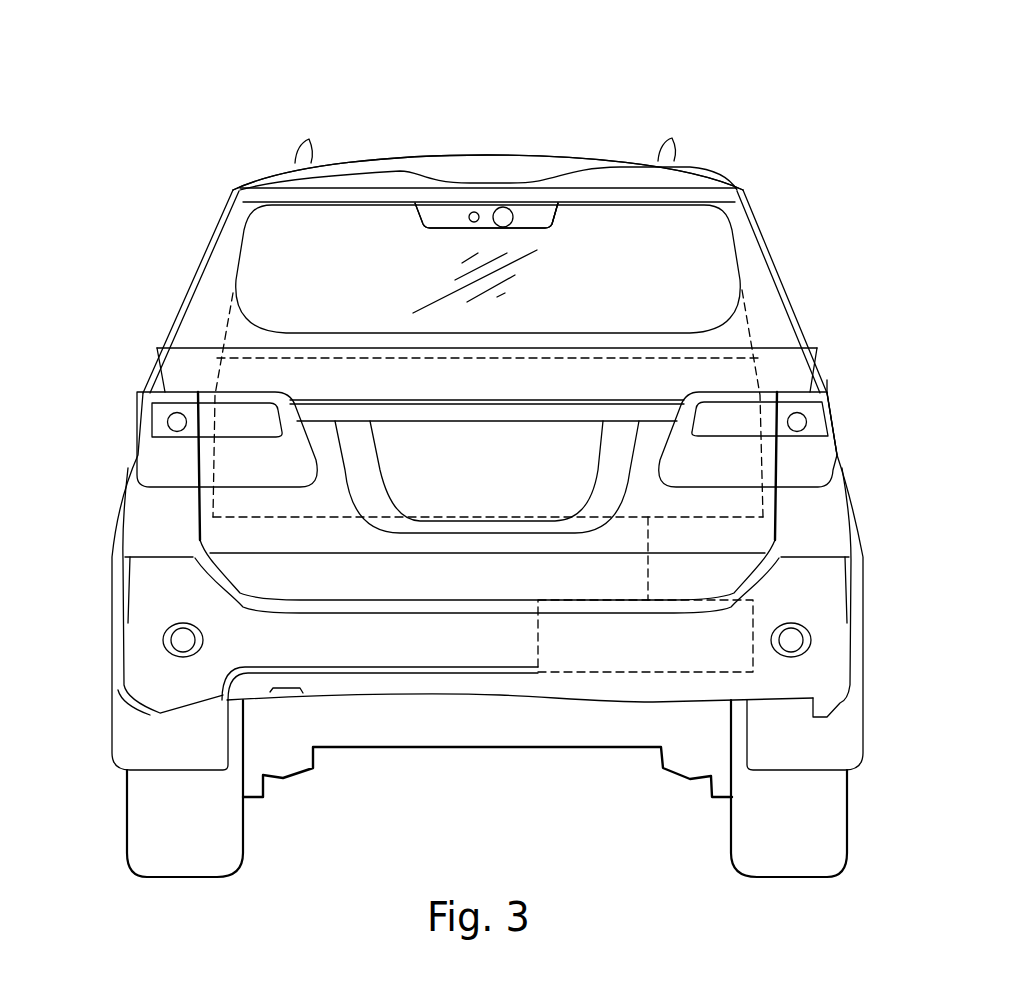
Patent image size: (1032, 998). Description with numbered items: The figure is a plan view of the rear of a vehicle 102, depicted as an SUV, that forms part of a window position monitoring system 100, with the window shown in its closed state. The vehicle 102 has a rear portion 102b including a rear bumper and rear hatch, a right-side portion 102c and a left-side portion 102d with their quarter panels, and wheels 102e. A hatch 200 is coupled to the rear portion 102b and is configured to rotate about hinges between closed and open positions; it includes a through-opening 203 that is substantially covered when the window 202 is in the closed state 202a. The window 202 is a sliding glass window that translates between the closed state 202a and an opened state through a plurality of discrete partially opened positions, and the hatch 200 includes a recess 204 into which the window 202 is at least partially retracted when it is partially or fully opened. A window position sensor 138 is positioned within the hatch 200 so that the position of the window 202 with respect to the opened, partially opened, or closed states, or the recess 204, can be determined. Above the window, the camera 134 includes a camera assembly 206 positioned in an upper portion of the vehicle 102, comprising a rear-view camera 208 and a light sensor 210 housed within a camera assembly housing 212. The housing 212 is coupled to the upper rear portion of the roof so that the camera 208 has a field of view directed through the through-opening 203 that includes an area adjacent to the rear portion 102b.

The window position monitoring system 100 is at (205, 72).
The vehicle 102 is at (740, 188).
The rear portion 102b is at (780, 230).
The right-side portion 102c is at (832, 367).
The left-side portion 102d is at (140, 370).
The wheels 102e is at (122, 850).
The camera 134 is at (462, 218).
The window position sensor 138 is at (667, 673).
The hatch 200 is at (730, 350).
The window 202 is at (257, 260).
The closed state 202a is at (247, 222).
The through-opening 203 is at (217, 312).
The recess 204 is at (213, 458).
The camera assembly 206 is at (406, 221).
The camera 208 is at (503, 206).
The light sensor 210 is at (473, 206).
The camera assembly housing 212 is at (553, 213).